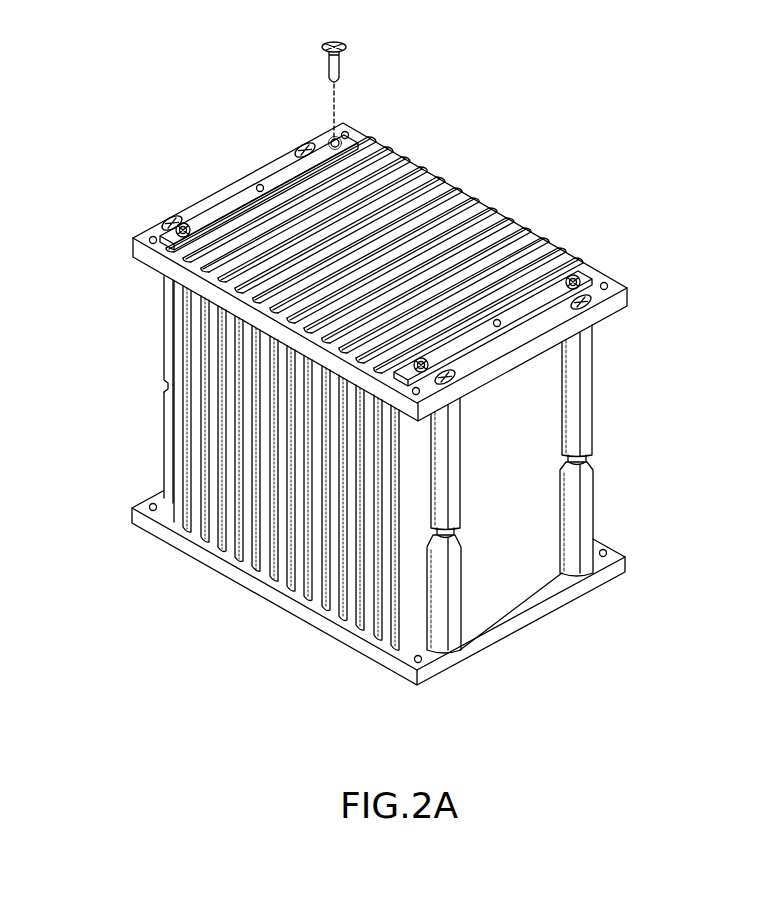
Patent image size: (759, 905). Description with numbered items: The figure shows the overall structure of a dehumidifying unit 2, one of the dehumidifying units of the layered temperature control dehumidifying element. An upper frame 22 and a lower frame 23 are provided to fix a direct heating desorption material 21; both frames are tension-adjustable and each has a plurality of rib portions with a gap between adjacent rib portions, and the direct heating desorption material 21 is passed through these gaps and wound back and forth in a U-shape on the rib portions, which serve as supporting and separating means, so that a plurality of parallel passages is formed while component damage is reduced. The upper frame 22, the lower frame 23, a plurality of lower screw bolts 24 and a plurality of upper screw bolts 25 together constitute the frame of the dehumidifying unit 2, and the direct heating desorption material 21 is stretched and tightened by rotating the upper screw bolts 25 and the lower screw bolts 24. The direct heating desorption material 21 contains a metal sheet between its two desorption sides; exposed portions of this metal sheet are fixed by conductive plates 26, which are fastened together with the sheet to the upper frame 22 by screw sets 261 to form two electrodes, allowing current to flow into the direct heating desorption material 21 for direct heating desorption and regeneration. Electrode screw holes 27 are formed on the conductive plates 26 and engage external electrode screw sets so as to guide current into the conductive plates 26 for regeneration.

The dehumidifying unit 2 is at (550, 128).
The direct heating desorption material 21 is at (183, 415).
The upper frame 22 is at (140, 238).
The lower frame 23 is at (273, 595).
The lower screw bolts 24 is at (168, 448).
The upper screw bolts 25 is at (166, 352).
The conductive plates 26 is at (283, 163).
The screw sets 261 is at (330, 72).
The electrode screw holes 27 is at (330, 140).